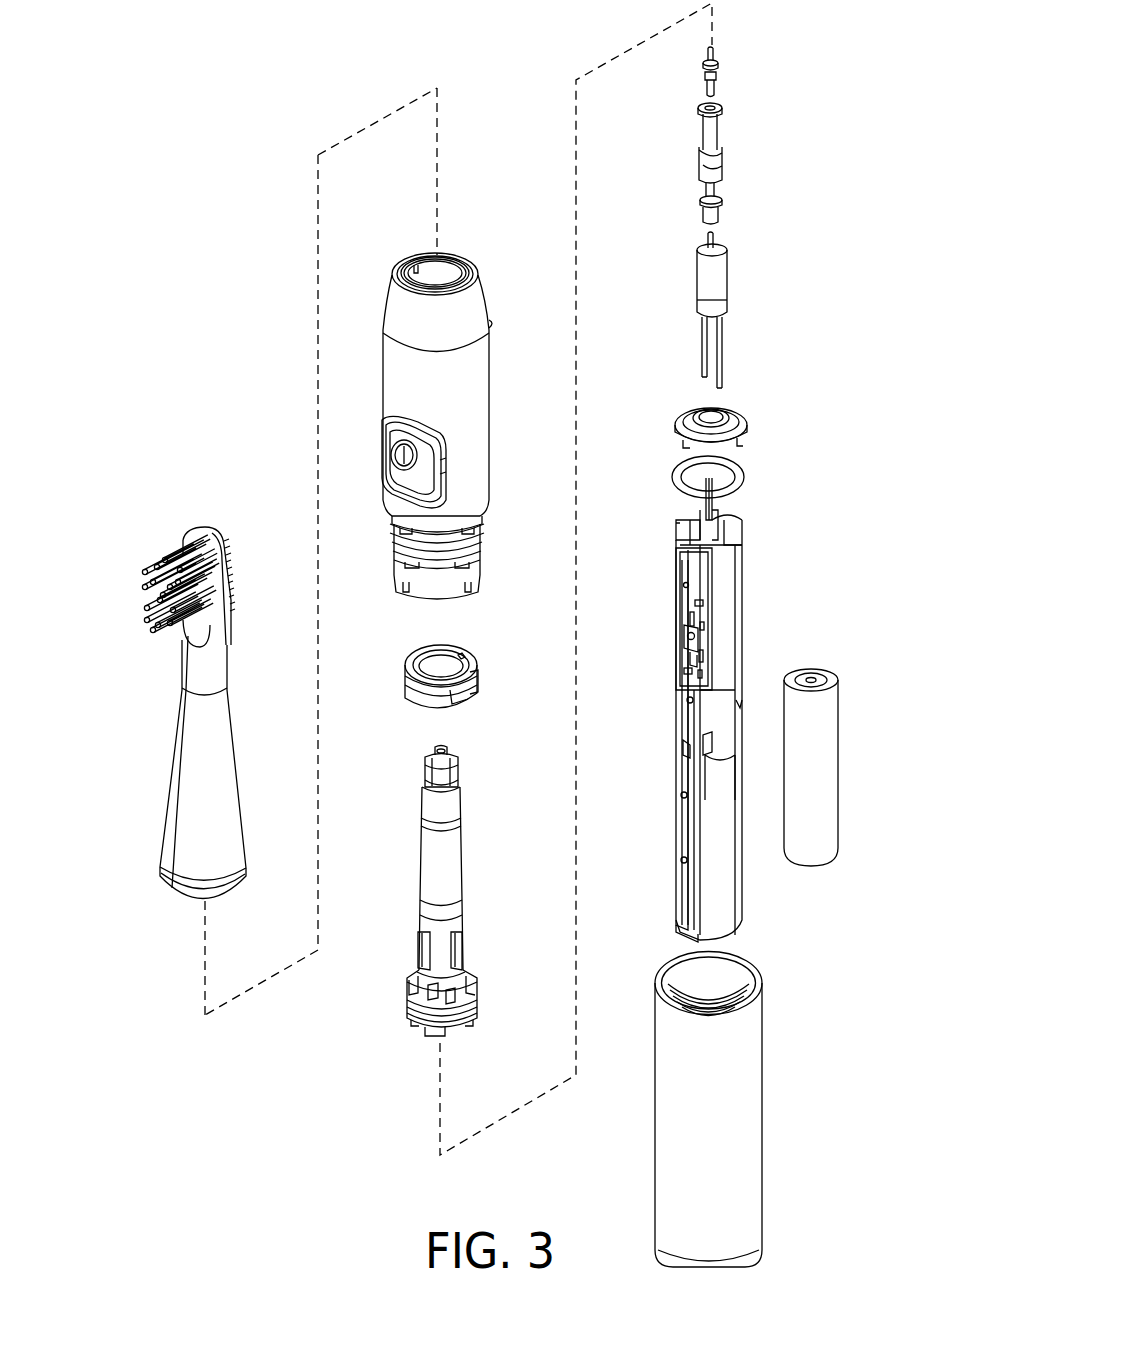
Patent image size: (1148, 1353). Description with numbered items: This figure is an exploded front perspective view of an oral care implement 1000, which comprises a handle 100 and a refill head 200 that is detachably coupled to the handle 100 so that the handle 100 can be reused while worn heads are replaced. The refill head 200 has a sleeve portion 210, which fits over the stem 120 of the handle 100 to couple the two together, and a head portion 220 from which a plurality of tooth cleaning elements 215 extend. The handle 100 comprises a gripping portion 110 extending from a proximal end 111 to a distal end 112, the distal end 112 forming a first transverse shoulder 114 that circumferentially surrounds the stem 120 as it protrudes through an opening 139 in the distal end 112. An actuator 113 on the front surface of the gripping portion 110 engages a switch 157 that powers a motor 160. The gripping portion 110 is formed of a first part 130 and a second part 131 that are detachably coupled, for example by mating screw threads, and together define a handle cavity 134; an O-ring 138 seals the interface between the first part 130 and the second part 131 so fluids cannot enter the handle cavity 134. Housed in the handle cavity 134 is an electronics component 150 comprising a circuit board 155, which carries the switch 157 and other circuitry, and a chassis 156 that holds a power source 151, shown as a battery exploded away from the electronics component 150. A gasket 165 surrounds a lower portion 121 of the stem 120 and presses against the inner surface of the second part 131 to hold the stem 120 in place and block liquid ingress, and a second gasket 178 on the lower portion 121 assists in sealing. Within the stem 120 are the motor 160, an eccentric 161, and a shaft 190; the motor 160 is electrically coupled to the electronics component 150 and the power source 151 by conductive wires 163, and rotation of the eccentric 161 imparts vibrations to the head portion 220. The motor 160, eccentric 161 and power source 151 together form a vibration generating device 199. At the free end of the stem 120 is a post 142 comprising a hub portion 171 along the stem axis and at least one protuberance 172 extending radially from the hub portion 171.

The oral care implement 1000 is at (875, 125).
The handle 100 is at (838, 568).
The refill head 200 is at (127, 722).
The sleeve portion 210 is at (180, 792).
The tooth cleaning elements 215 is at (132, 558).
The head portion 220 is at (230, 567).
The gripping portion 110 is at (730, 1093).
The proximal end 111 is at (705, 1268).
The distal end 112 is at (470, 262).
The actuator 113 is at (405, 460).
The first transverse shoulder 114 is at (406, 262).
The stem 120 is at (437, 857).
The lower portion 121 is at (477, 1007).
The first part 130 is at (722, 1143).
The second part 131 is at (468, 378).
The handle cavity 134 is at (727, 980).
The O-ring 138 is at (742, 472).
The opening 139 is at (450, 280).
The post 142 is at (464, 764).
The electronics component 150 is at (752, 630).
The power source 151 is at (815, 778).
The circuit board 155 is at (700, 580).
The chassis 156 is at (722, 852).
The switch 157 is at (702, 656).
The motor 160 is at (722, 290).
The eccentric 161 is at (712, 140).
The conductive wires 163 is at (700, 362).
The gasket 165 is at (473, 672).
The hub portion 171 is at (442, 768).
The protuberance 172 is at (447, 778).
The second gasket 178 is at (690, 446).
The shaft 190 is at (722, 82).
The vibration generating device 199 is at (694, 230).